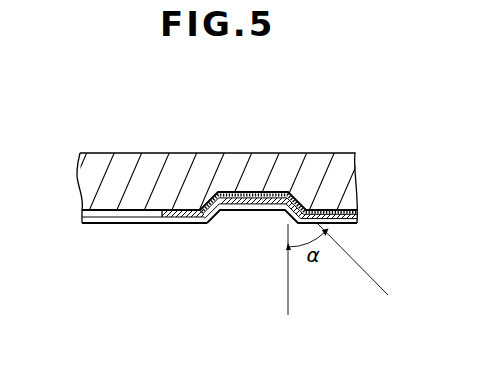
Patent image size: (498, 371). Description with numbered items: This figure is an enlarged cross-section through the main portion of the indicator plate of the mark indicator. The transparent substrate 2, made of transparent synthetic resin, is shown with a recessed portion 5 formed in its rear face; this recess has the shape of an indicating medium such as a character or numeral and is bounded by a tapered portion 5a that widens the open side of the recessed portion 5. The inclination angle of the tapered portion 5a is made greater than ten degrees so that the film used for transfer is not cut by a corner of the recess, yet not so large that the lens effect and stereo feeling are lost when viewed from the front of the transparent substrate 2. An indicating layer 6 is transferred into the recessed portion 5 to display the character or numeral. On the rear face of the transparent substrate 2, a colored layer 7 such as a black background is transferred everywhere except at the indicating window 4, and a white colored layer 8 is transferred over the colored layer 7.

The transparent substrate 2 is at (280, 192).
The indicating window 4 is at (127, 221).
The recessed portion 5 is at (253, 192).
The tapered portion 5a is at (308, 212).
The indicating layer 6 is at (217, 191).
The colored layer 7 is at (182, 221).
The white colored layer 8 is at (215, 221).